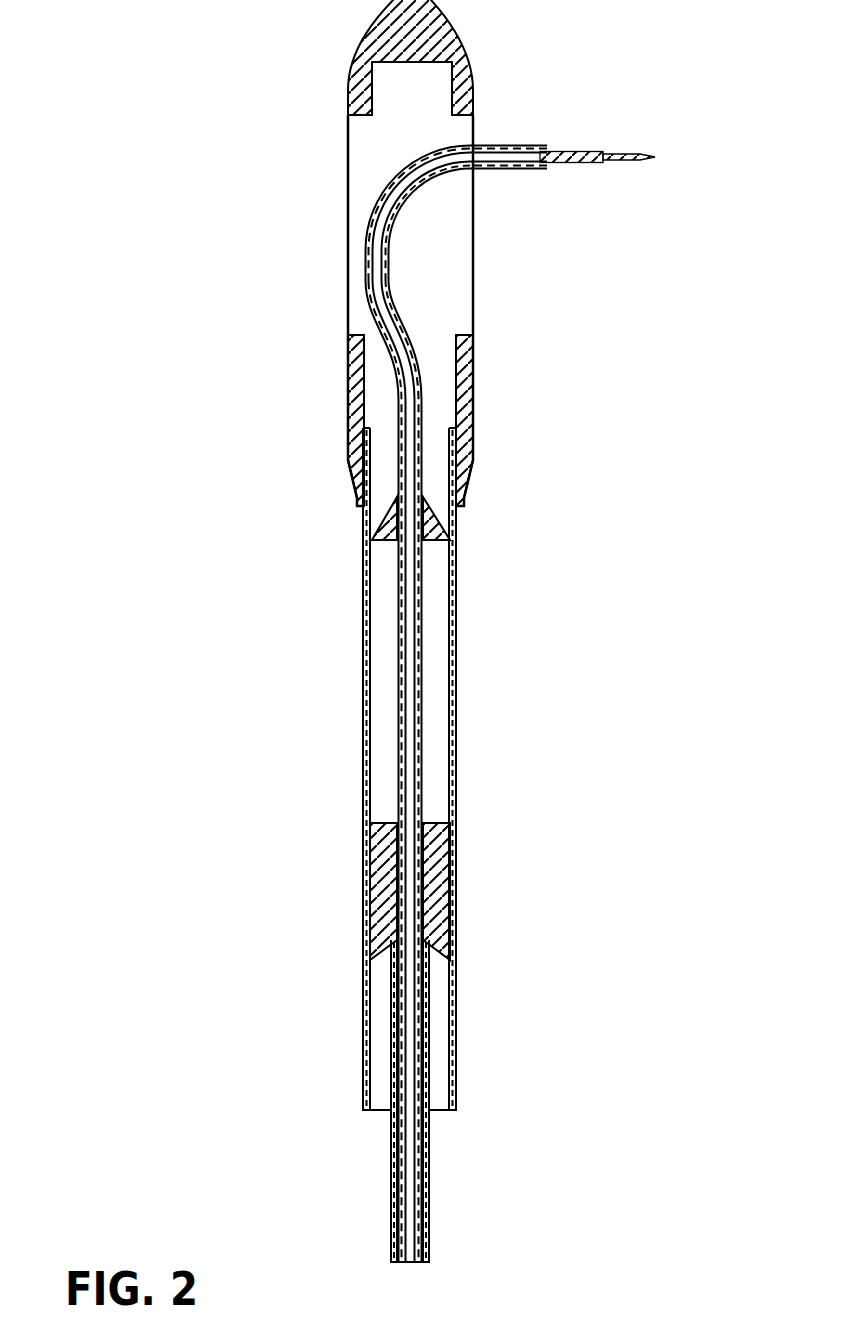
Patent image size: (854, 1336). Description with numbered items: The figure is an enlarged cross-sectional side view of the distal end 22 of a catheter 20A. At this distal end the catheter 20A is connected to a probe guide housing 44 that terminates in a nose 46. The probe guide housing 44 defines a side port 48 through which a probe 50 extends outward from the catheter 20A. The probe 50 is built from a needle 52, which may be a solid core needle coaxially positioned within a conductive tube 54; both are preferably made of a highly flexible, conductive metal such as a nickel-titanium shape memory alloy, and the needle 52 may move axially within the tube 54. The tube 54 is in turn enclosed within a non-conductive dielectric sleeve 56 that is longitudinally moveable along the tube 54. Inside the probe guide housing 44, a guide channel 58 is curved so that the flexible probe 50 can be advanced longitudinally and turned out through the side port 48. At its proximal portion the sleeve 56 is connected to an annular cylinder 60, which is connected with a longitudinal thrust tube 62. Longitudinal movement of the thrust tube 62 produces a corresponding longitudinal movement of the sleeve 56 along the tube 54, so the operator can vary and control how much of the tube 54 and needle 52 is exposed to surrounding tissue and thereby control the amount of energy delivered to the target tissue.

The distal end 22 is at (287, 255).
The probe guide housing 44 is at (476, 376).
The nose 46 is at (457, 30).
The side port 48 is at (478, 130).
The probe 50 is at (618, 187).
The needle 52 is at (618, 141).
The conductive tube 54 is at (577, 149).
The dielectric sleeve 56 is at (505, 173).
The guide channel 58 is at (389, 237).
The catheter 20A is at (458, 764).
The annular cylinder 60 is at (440, 896).
The thrust tube 62 is at (433, 1083).